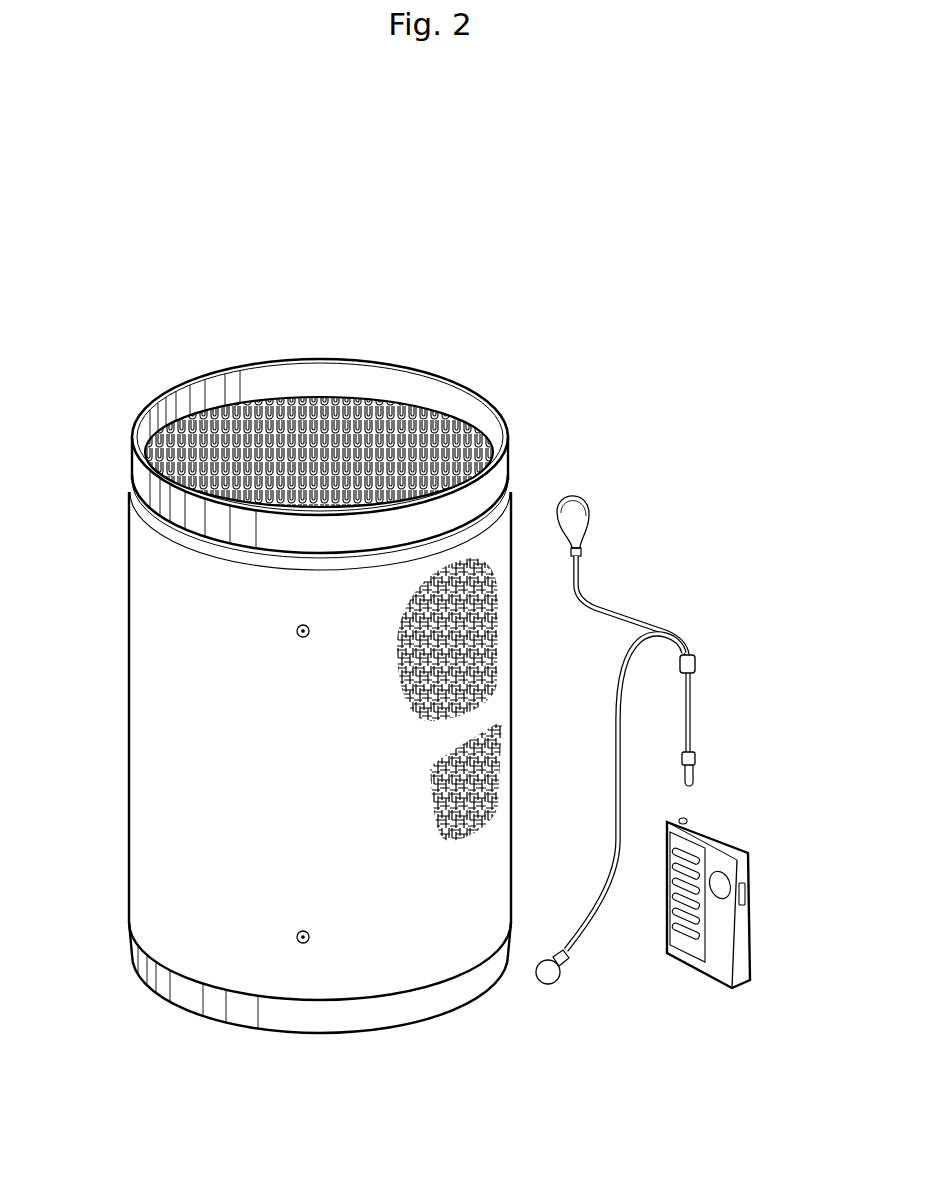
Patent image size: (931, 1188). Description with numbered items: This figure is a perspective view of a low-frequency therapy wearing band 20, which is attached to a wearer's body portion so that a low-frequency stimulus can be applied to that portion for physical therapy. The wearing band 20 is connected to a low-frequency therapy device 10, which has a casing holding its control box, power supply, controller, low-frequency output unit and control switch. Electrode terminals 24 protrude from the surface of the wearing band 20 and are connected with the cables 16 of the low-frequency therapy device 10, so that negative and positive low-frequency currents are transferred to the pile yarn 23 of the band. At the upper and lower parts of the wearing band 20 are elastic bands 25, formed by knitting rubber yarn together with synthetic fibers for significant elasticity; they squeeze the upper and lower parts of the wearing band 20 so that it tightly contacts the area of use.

The low-frequency therapy device 10 is at (751, 930).
The cables 16 is at (636, 622).
The low-frequency therapy wearing band 20 is at (128, 752).
The pile yarn 23 is at (402, 406).
The electrode terminals 24 is at (297, 631).
The elastic bands 25 is at (131, 460).